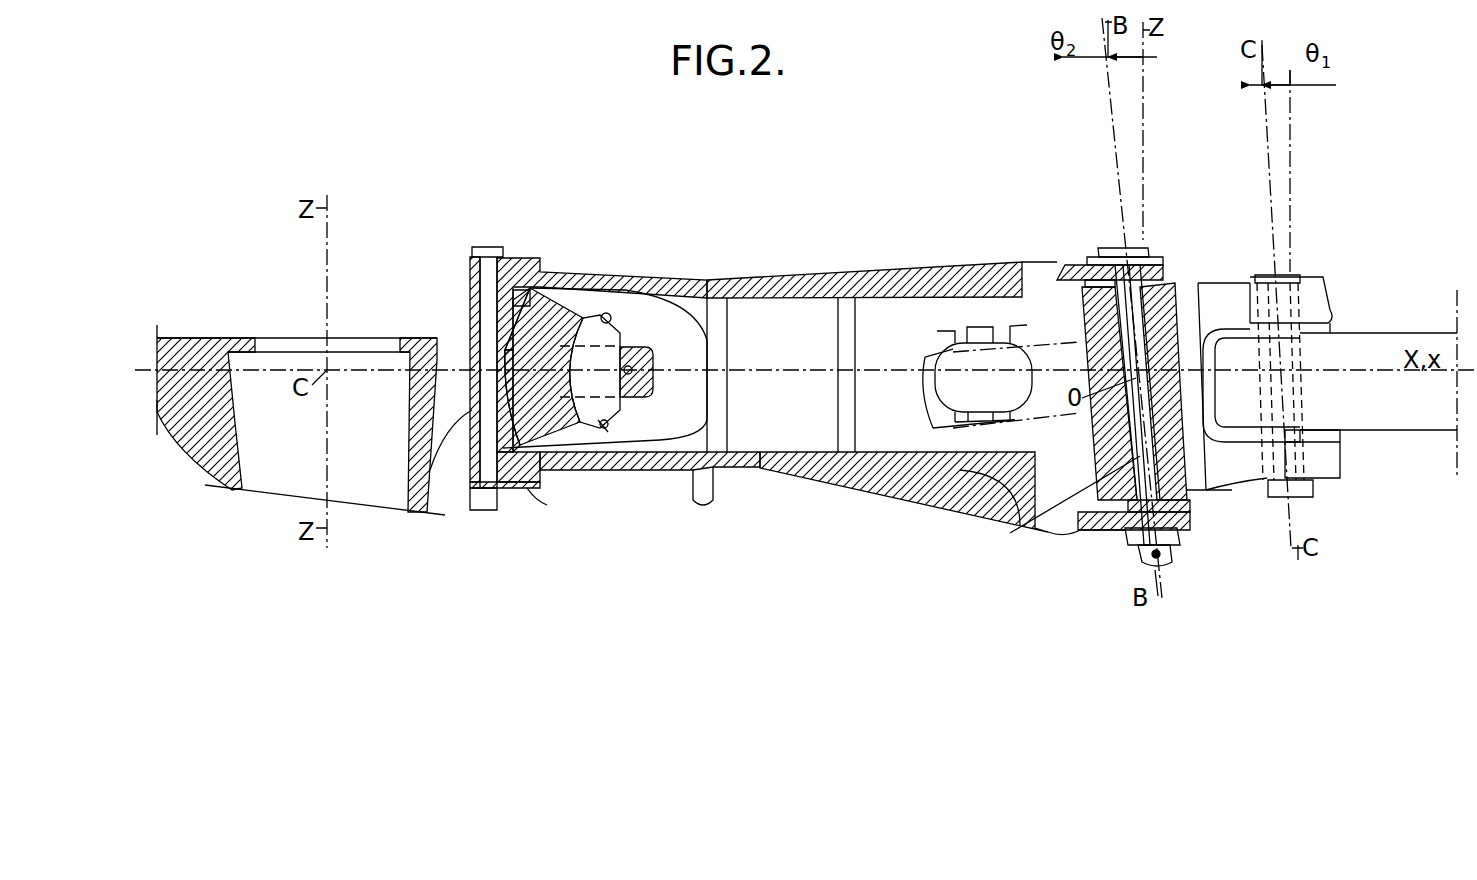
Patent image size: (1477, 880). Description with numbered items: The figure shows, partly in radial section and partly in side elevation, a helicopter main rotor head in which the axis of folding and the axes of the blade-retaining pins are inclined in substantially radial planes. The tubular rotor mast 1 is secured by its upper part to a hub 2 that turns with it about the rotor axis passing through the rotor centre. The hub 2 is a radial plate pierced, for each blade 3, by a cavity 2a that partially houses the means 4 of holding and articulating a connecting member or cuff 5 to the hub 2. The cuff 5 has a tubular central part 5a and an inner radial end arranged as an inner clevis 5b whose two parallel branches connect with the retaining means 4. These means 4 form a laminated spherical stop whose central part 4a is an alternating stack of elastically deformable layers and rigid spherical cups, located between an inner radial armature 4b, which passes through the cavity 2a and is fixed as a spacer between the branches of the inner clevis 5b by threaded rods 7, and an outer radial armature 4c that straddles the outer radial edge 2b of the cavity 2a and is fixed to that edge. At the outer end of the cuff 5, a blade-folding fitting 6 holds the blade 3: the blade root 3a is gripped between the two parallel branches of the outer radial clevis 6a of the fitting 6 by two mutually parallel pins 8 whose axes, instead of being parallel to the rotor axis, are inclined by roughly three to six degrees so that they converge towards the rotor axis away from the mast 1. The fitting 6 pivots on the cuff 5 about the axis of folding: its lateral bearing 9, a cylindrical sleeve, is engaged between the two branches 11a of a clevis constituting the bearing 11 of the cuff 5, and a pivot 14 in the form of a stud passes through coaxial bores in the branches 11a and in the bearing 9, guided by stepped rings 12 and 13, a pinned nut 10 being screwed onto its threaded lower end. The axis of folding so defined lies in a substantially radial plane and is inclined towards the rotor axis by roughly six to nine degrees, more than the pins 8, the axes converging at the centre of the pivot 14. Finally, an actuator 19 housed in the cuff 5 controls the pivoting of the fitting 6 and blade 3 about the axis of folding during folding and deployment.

The rotor mast 1 is at (228, 488).
The hub 2 is at (212, 432).
The cavity 2a is at (452, 352).
The outer radial edge 2b is at (655, 348).
The blade 3 is at (1427, 332).
The blade root 3a is at (1333, 365).
The retaining and articulating means 4 is at (568, 432).
The central part 4a is at (550, 440).
The inner radial armature 4b is at (518, 290).
The outer radial armature 4c is at (603, 422).
The cuff 5 is at (810, 478).
The central part 5a is at (866, 290).
The inner clevis 5b is at (588, 280).
The blade-folding fitting 6 is at (1208, 280).
The outer radial clevis 6a is at (1328, 468).
The threaded rods 7 is at (491, 247).
The pins 8 is at (1283, 492).
The bearing 9 is at (1100, 322).
The pinned nut 10 is at (1128, 540).
The bearing 11 is at (1056, 256).
The branches 11a is at (1078, 265).
The stepped ring 12 is at (1170, 282).
The stepped ring 13 is at (1188, 492).
The pivot 14 is at (1060, 520).
The actuator 19 is at (962, 392).